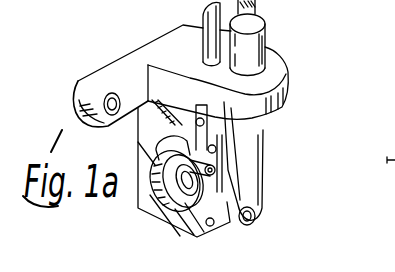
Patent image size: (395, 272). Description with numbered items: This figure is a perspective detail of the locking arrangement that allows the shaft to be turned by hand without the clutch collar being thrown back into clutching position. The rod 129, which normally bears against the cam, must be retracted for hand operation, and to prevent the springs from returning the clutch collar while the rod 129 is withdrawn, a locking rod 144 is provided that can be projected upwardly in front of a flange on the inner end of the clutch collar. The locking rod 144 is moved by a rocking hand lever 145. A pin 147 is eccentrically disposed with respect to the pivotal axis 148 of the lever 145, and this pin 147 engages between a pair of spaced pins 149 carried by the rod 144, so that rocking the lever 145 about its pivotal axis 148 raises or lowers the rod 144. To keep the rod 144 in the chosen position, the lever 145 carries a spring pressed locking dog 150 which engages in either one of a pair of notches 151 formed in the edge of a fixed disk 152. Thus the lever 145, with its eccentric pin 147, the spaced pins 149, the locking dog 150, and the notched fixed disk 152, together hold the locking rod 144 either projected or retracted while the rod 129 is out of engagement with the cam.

The locking rod 144 is at (203, 16).
The rod 129 is at (259, 13).
The spaced pins 149 is at (208, 143).
The pin 147 is at (213, 166).
The pivotal axis 148 is at (210, 193).
The notches 151 is at (154, 158).
The fixed disk 152 is at (157, 140).
The spring pressed locking dog 150 is at (140, 212).
The rocking hand lever 145 is at (188, 225).